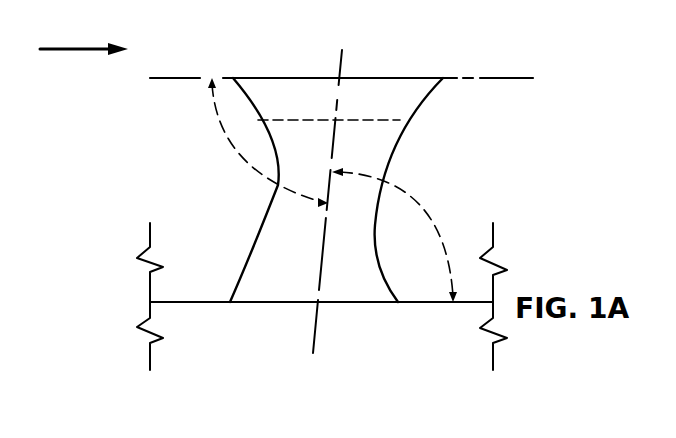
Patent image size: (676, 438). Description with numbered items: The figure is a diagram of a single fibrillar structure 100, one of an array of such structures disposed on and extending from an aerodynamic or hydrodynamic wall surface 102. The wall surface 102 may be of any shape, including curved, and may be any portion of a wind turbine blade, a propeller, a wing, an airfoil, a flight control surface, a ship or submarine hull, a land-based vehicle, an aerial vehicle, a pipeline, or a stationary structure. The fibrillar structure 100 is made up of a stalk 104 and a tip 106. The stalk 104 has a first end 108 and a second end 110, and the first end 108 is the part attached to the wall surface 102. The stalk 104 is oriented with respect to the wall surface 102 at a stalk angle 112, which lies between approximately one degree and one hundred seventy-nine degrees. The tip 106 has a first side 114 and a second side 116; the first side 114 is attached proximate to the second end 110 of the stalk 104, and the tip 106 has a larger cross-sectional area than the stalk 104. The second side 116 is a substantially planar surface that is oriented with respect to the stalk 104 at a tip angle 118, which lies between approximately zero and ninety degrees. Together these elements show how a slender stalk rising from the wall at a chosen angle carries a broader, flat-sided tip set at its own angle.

The fibrillar structure 100 is at (85, 117).
The wall surface 102 is at (391, 343).
The stalk 104 is at (272, 303).
The tip 106 is at (399, 78).
The first end 108 is at (210, 299).
The second end 110 is at (311, 130).
The stalk angle 112 is at (408, 202).
The first side 114 is at (289, 112).
The second side 116 is at (189, 70).
The tip angle 118 is at (248, 161).